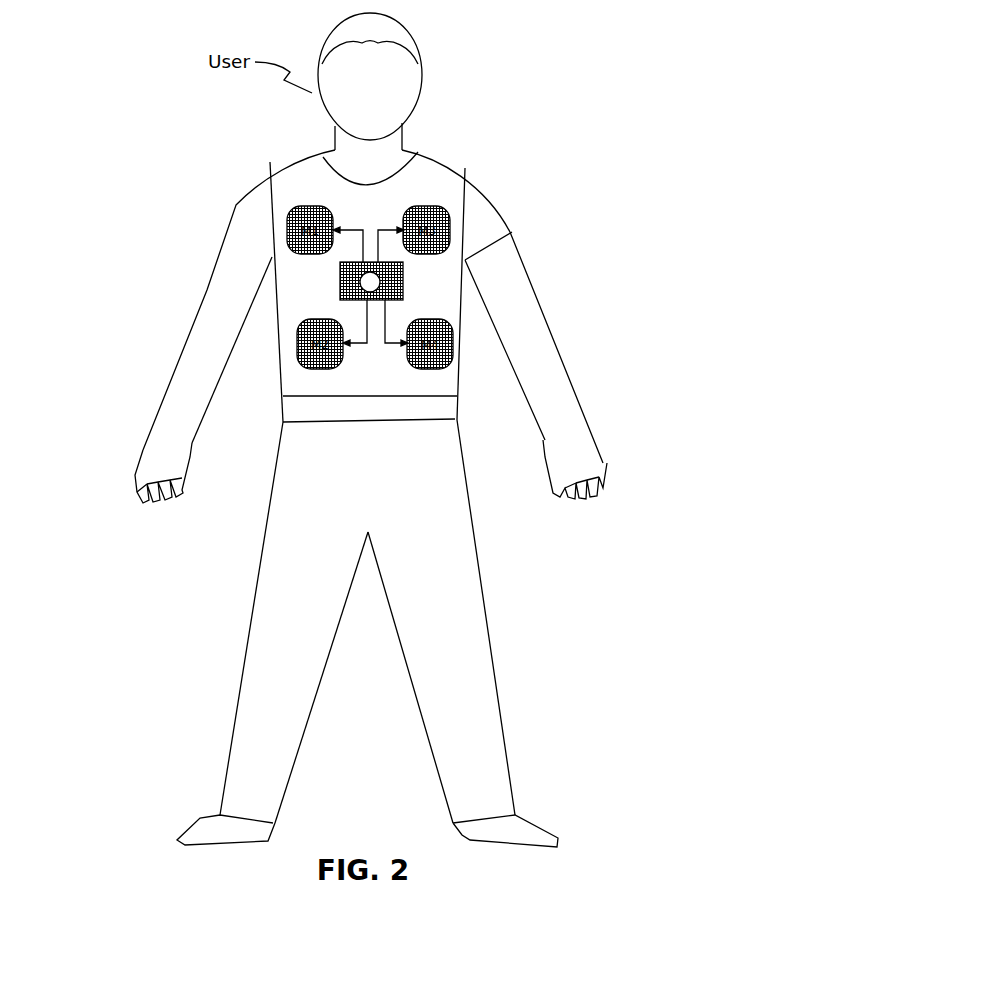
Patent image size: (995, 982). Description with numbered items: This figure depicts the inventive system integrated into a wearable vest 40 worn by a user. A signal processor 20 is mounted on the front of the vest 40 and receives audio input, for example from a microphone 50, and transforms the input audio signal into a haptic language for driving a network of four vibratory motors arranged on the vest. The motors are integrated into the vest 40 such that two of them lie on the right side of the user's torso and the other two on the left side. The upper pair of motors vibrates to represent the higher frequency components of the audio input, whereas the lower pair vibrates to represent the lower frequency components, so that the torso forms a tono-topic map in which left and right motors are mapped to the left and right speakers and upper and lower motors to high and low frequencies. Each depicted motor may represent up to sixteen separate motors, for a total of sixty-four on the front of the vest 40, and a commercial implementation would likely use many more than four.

The signal processor 20 is at (340, 280).
The vest 40 is at (289, 188).
The microphone 50 is at (403, 277).